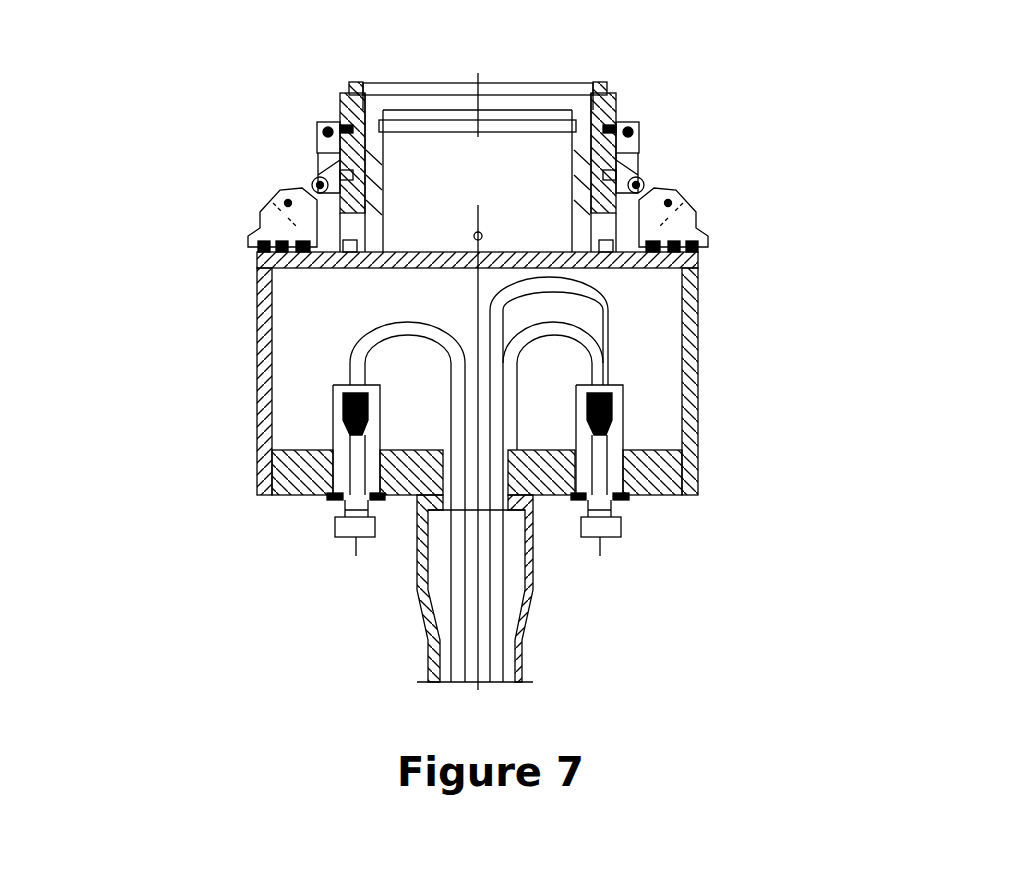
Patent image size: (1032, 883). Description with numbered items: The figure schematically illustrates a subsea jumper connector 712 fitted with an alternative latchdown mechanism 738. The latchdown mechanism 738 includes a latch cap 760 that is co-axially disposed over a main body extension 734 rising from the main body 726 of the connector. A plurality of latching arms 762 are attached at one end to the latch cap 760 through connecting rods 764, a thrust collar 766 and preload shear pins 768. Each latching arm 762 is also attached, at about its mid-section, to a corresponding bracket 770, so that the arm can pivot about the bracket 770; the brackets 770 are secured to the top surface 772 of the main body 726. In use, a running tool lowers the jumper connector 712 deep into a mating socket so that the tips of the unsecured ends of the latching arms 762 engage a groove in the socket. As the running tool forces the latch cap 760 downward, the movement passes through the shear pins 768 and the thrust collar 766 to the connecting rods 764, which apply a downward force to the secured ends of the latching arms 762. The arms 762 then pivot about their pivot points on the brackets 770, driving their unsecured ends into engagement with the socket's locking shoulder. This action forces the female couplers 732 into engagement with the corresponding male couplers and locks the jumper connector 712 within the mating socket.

The jumper connector 712 is at (158, 327).
The main body 726 is at (696, 340).
The female couplers 732 is at (607, 527).
The main body extension 734 is at (402, 170).
The latchdown mechanism 738 is at (730, 212).
The latch cap 760 is at (350, 84).
The latching arms 762 is at (302, 188).
The connecting rods 764 is at (320, 140).
The thrust collar 766 is at (318, 170).
The preload shear pins 768 is at (345, 103).
The brackets 770 is at (272, 218).
The top surface 772 is at (270, 255).